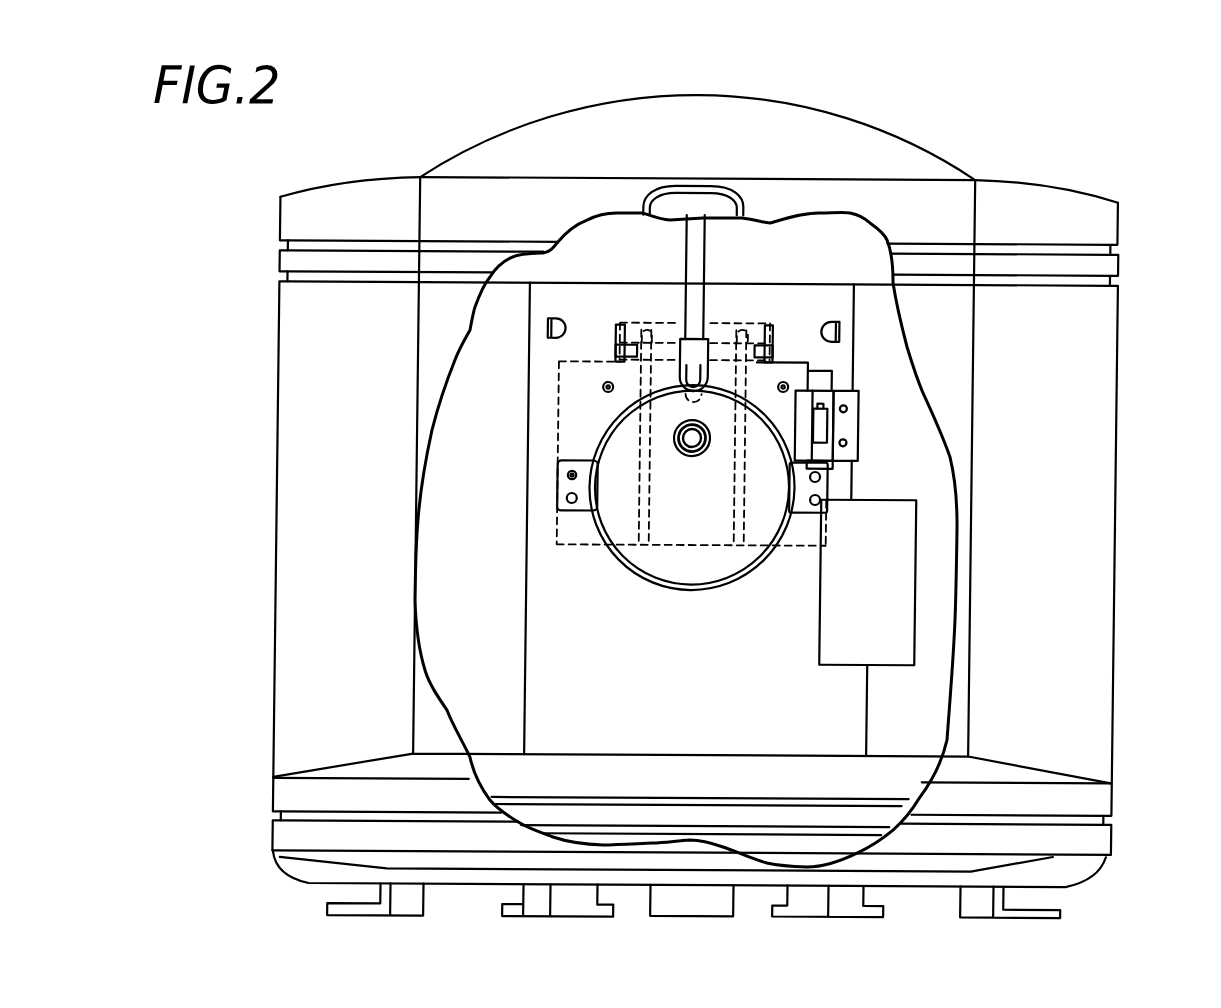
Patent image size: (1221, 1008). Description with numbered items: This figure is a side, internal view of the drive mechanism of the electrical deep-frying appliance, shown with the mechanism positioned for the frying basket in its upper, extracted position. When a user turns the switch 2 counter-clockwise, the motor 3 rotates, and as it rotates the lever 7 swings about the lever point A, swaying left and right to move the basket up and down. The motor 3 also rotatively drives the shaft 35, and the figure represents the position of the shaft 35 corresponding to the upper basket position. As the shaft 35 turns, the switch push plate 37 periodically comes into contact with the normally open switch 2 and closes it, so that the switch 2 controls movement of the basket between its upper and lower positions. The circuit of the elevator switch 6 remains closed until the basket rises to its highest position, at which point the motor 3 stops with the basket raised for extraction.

The switch 2 is at (807, 534).
The motor 3 is at (722, 477).
The elevator switch 6 is at (824, 431).
The lever 7 is at (694, 255).
The shaft 35 is at (778, 334).
The switch push plate 37 is at (818, 397).
The lever point A is at (773, 350).